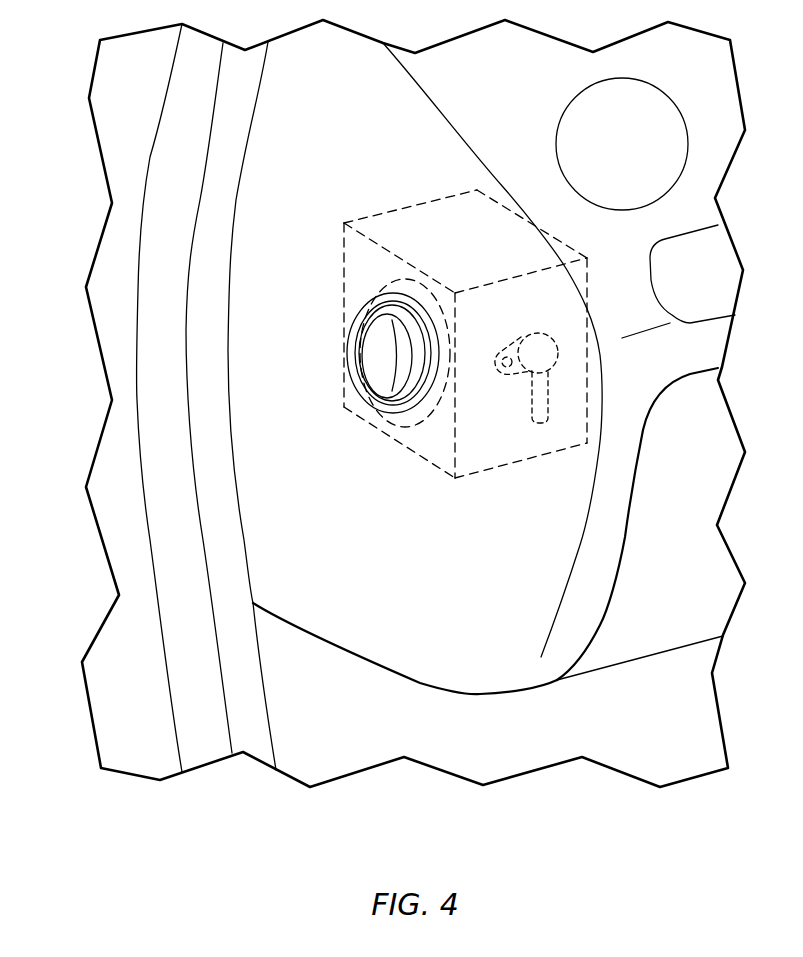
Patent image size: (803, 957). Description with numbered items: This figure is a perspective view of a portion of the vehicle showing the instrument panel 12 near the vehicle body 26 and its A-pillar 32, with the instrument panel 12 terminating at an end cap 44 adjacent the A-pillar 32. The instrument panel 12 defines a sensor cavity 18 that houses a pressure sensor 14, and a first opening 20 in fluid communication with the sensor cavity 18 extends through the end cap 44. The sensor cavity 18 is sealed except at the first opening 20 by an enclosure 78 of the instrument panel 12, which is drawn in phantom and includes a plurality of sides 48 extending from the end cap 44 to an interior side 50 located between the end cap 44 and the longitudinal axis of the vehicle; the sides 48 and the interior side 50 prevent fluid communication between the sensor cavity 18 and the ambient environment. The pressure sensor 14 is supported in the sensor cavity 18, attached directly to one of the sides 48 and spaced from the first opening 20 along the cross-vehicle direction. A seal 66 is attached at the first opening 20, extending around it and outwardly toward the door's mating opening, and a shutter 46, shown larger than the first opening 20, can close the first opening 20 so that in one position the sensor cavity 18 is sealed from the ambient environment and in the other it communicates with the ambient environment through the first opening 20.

The instrument panel 12 is at (602, 673).
The pressure sensor 14 is at (545, 403).
The sensor cavity 18 is at (466, 276).
The first opening 20 is at (396, 365).
The vehicle body 26 is at (135, 222).
The A-pillar 32 is at (150, 157).
The end cap 44 is at (420, 681).
The shutter 46 is at (396, 420).
The sides 48 is at (447, 197).
The interior side 50 is at (550, 233).
The seal 66 is at (355, 335).
The enclosure 78 is at (369, 200).